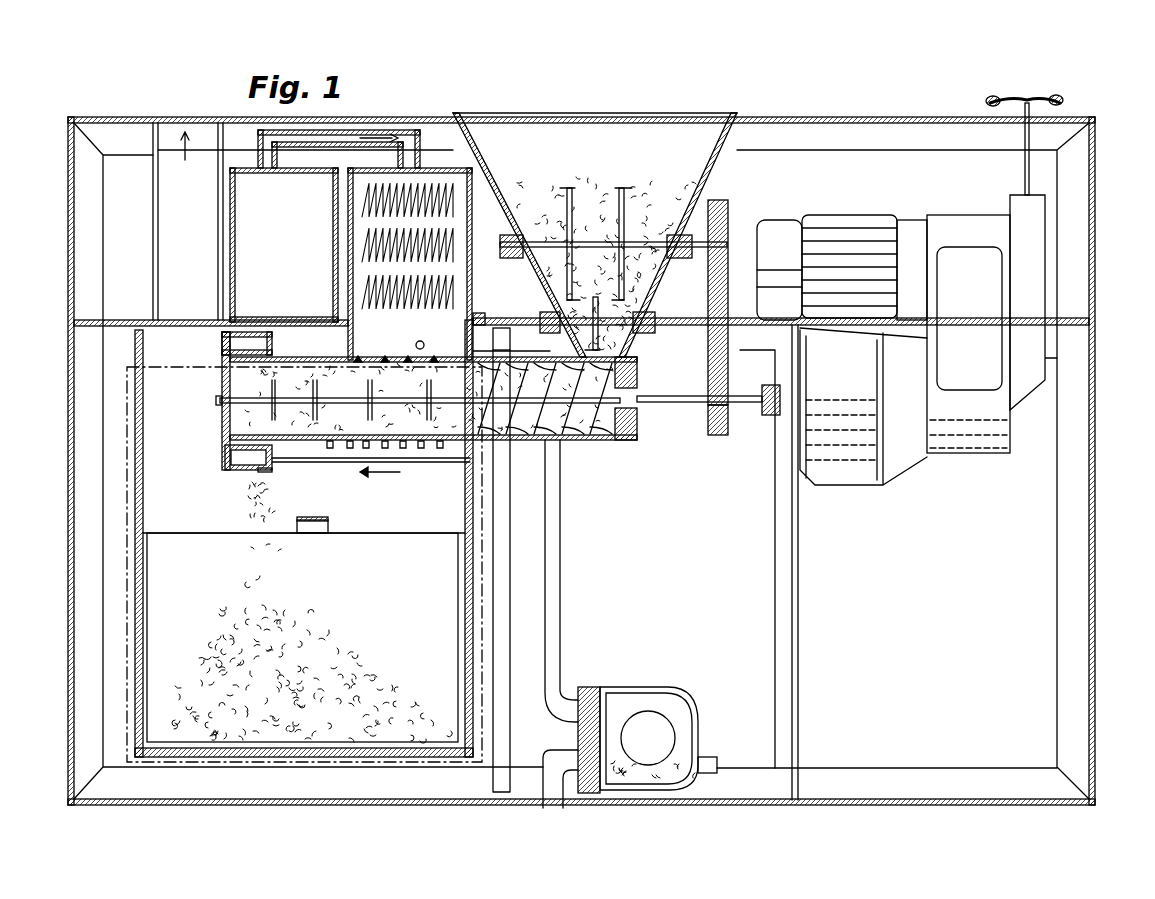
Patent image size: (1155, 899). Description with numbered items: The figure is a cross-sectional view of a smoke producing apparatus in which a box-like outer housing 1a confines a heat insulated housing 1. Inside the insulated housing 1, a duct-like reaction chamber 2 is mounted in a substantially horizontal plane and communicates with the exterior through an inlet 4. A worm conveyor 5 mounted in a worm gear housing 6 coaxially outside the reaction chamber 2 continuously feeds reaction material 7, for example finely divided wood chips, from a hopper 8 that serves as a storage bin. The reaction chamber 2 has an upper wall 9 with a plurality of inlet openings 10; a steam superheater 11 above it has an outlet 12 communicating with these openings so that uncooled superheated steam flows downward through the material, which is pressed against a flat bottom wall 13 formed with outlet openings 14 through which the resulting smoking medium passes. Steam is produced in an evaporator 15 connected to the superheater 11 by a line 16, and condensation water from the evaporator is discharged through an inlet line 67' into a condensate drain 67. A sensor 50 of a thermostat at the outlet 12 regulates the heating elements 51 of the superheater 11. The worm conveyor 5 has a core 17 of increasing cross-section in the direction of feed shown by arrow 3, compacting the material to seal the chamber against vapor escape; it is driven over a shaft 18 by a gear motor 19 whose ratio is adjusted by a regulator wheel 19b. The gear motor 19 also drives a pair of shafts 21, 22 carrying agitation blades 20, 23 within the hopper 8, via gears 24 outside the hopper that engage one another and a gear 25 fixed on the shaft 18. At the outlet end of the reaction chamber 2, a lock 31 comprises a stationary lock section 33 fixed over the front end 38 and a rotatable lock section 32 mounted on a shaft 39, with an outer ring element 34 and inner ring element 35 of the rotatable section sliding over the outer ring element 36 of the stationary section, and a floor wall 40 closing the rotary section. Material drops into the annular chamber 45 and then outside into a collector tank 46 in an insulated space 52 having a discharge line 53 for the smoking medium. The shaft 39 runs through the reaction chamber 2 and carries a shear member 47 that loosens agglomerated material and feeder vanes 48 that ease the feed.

The heat insulated housing 1 is at (128, 454).
The outer housing 1a is at (1097, 526).
The reaction chamber 2 is at (330, 448).
The direction of feed 3 is at (385, 452).
The inlet 4 is at (505, 471).
The worm conveyor 5 is at (598, 441).
The worm gear housing 6 is at (622, 441).
The reaction material 7 is at (365, 448).
The hopper 8 is at (712, 165).
The upper wall 9 is at (359, 357).
The inlet openings 10 is at (408, 356).
The steam superheater 11 is at (356, 267).
The outlet 12 is at (450, 316).
The bottom wall 13 is at (408, 450).
The outlet openings 14 is at (371, 492).
The evaporator 15 is at (250, 203).
The line 16 is at (345, 133).
The core 17 is at (565, 441).
The shaft 18 is at (652, 403).
The gear motor 19 is at (892, 475).
The regulator wheel 19b is at (988, 101).
The agitation blade 20 is at (575, 290).
The shaft 21 is at (655, 238).
The shaft 22 is at (678, 320).
The agitation blade 23 is at (597, 185).
The gears 24 is at (723, 297).
The gear 25 is at (728, 433).
The lock 31 is at (218, 457).
The rotatable lock section 32 is at (222, 344).
The stationary lock section 33 is at (272, 347).
The outer ring element 34 is at (240, 471).
The inner ring element 35 is at (264, 470).
The outer ring element 36 is at (245, 332).
The front end 38 is at (277, 443).
The shaft 39 is at (220, 400).
The floor wall 40 is at (222, 380).
The annular chamber 45 is at (232, 468).
The collector tank 46 is at (167, 578).
The shear member 47 is at (227, 425).
The feeder vanes 48 is at (428, 450).
The sensor 50 is at (424, 343).
The heating elements 51 is at (362, 208).
The insulated space 52 is at (150, 398).
The discharge line 53 is at (178, 246).
The condensate drain 67 is at (630, 724).
The inlet line 67' is at (580, 581).